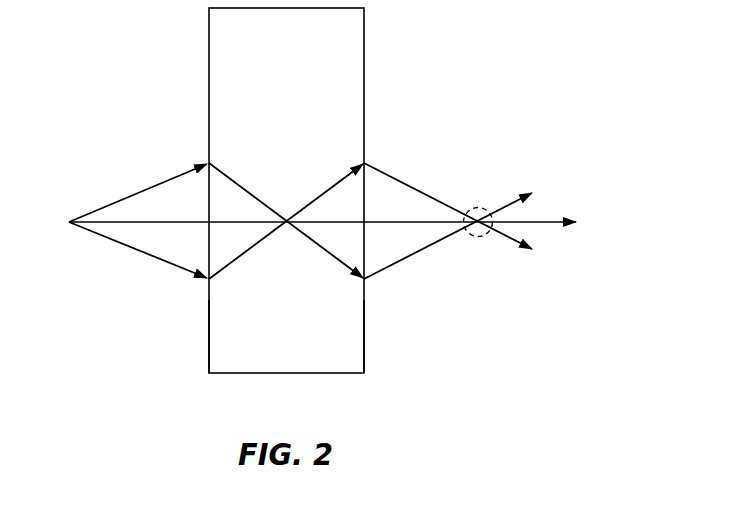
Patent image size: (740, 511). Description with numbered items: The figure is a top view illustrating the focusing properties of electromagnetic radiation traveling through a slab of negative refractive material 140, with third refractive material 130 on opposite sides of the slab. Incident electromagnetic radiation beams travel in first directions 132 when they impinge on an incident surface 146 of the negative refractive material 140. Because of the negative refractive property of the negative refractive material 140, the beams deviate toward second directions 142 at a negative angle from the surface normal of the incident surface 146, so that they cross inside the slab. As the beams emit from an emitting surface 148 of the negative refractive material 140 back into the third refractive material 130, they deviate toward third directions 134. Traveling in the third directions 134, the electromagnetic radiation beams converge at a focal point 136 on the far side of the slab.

The third refractive material 130 is at (292, 58).
The negative refractive material 140 is at (286, 190).
The first directions 132 is at (133, 190).
The second directions 142 is at (333, 183).
The third directions 134 is at (395, 175).
The focal point 136 is at (483, 205).
The incident surface 146 is at (208, 333).
The emitting surface 148 is at (364, 342).